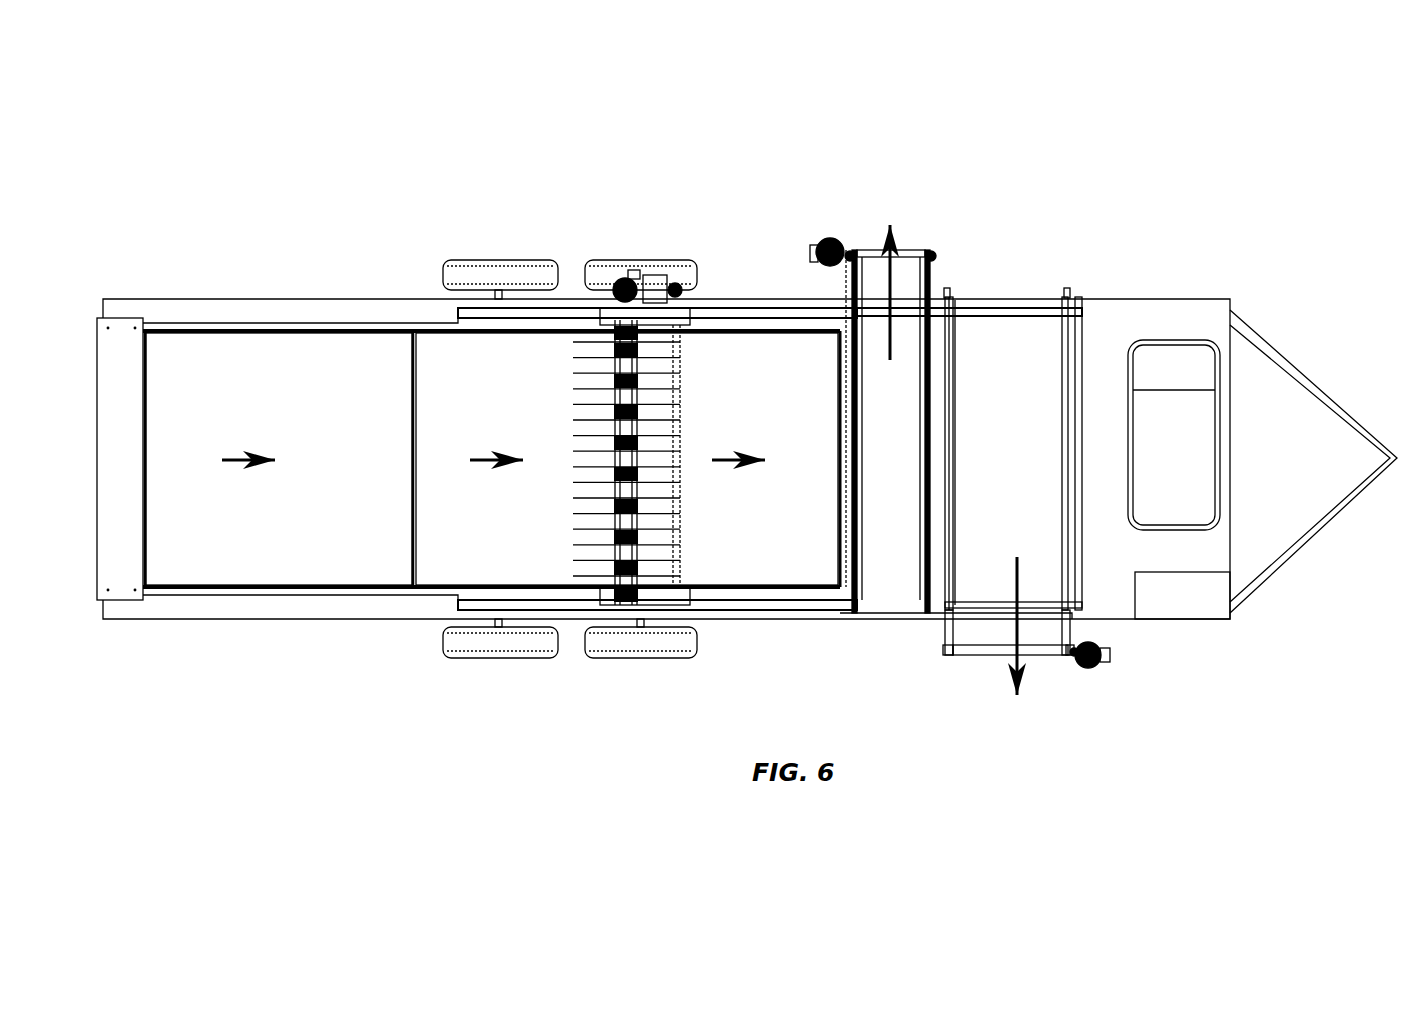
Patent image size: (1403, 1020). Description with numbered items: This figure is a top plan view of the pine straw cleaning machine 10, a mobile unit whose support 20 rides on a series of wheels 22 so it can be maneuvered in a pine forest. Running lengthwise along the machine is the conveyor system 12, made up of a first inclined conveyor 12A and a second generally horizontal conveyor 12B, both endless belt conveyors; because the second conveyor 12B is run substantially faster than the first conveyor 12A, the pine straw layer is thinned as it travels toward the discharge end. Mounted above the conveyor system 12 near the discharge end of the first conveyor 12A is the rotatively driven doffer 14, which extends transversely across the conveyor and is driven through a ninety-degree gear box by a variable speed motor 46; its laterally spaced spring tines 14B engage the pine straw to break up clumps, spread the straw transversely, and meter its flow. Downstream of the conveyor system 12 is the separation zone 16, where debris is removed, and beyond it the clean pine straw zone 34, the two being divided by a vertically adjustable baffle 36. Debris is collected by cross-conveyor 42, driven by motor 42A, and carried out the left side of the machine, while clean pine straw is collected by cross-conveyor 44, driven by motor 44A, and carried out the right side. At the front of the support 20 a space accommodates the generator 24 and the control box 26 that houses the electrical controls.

The pine straw cleaning machine 10 is at (433, 143).
The conveyor system 12 is at (500, 440).
The first inclined conveyor 12A is at (487, 398).
The second generally horizontal conveyor 12B is at (770, 360).
The doffer 14 is at (526, 506).
The tines 14B is at (652, 562).
The separation zone 16 is at (885, 410).
The support 20 is at (183, 308).
The wheels 22 is at (602, 277).
The generator 24 is at (1178, 483).
The control box 26 is at (1183, 587).
The clean pine straw zone 34 is at (1017, 372).
The baffle 36 is at (940, 545).
The cross-conveyor 42 is at (900, 380).
The motor 42A is at (822, 240).
The cross-conveyor 44 is at (1000, 563).
The motor 44A is at (1097, 668).
The variable speed motor 46 is at (655, 290).